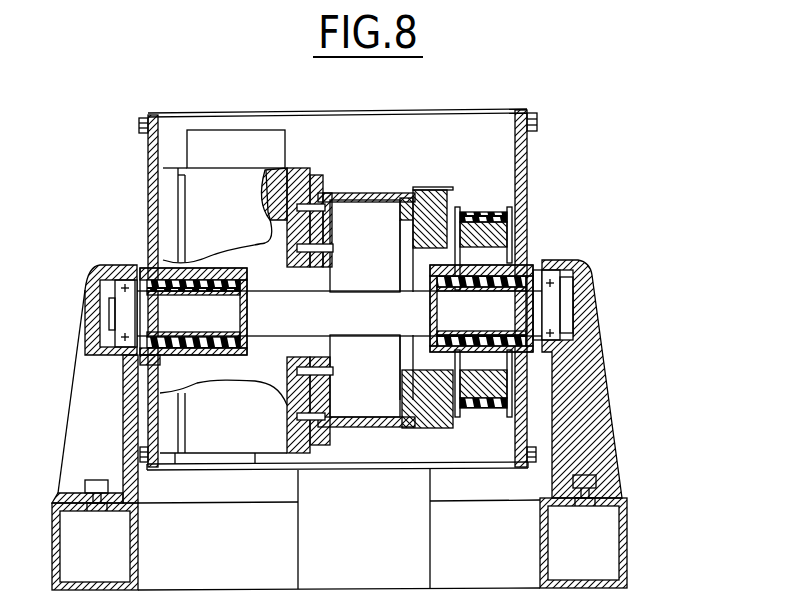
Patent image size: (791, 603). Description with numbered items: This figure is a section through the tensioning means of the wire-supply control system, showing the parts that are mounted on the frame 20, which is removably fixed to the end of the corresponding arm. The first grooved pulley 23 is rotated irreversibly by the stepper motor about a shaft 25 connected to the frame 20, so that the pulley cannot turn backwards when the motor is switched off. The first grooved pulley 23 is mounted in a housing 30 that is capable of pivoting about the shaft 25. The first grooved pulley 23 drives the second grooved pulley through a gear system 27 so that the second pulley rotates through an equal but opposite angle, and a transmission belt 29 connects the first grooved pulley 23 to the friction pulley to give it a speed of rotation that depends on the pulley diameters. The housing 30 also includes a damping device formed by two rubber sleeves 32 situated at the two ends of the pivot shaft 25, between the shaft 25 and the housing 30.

The frame 20 is at (627, 544).
The first grooved pulley 23 is at (333, 195).
The shaft 25 is at (555, 308).
The gear system 27 is at (425, 190).
The transmission belt 29 is at (487, 213).
The housing 30 is at (465, 111).
The rubber sleeves 32 is at (513, 263).